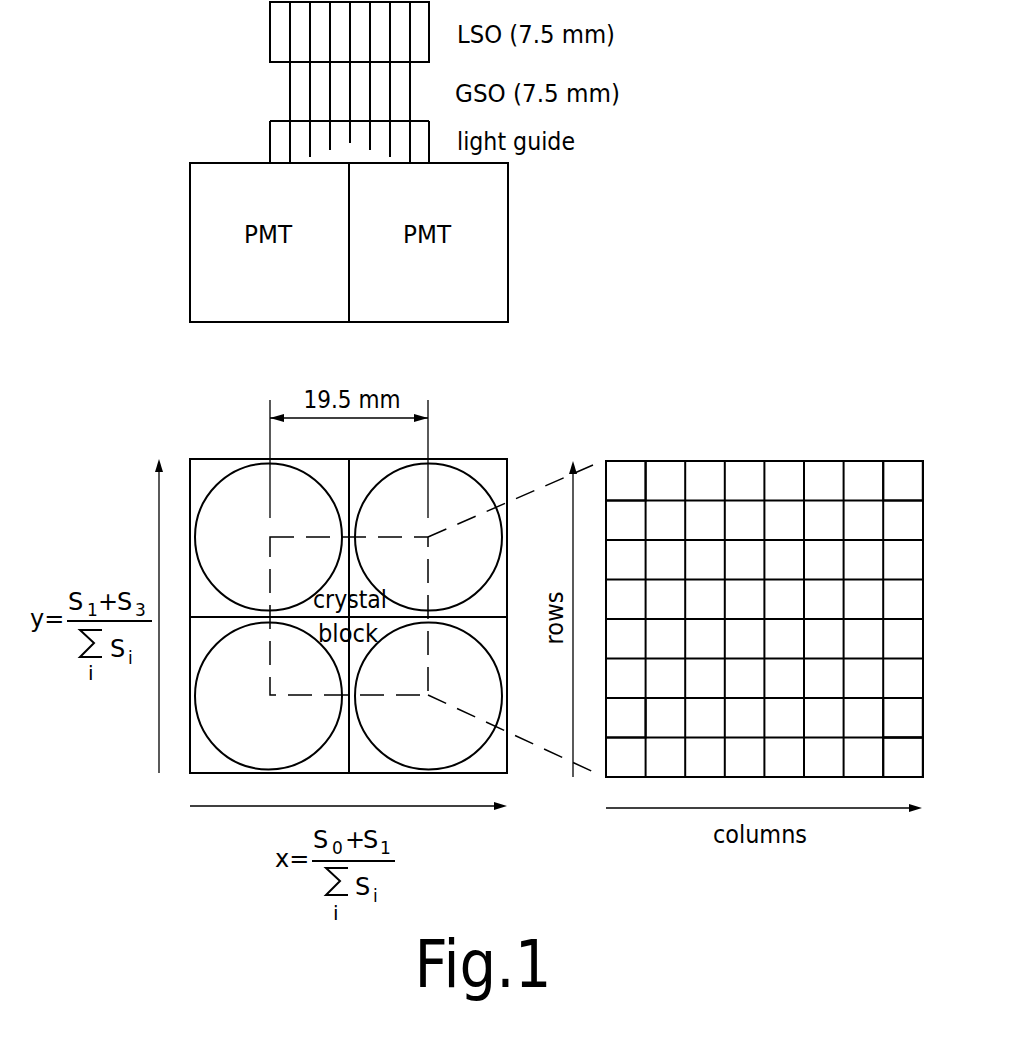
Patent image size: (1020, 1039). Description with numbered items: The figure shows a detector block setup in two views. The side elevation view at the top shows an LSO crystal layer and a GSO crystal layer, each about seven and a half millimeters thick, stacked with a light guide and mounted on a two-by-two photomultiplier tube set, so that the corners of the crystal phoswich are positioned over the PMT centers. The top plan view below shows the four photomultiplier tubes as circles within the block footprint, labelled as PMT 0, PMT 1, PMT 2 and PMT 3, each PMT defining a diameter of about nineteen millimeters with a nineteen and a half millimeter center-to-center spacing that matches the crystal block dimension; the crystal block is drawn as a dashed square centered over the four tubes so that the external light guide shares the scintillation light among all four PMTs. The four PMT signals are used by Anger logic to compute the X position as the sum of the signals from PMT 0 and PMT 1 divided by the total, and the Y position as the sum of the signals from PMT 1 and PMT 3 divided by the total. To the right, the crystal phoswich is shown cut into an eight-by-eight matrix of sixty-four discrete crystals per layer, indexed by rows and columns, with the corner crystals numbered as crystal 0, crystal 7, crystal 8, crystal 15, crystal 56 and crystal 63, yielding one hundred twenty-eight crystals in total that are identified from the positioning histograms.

The PMT quadrant 0 / crystal 0 is at (494, 619).
The PMT quadrant 1 is at (428, 696).
The PMT quadrant 2 is at (268, 537).
The PMT quadrant 3 is at (268, 696).
The crystal 56 is at (626, 481).
The crystal 63 is at (903, 481).
The crystal 8 is at (626, 718).
The crystal 15 is at (903, 718).
The crystal 7 is at (903, 758).